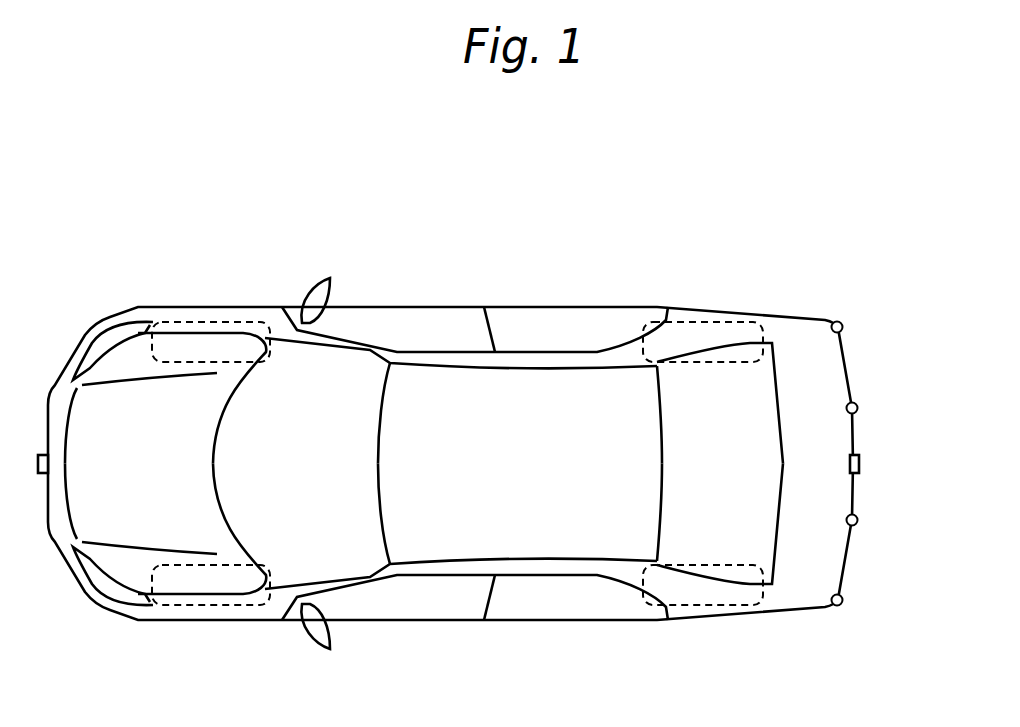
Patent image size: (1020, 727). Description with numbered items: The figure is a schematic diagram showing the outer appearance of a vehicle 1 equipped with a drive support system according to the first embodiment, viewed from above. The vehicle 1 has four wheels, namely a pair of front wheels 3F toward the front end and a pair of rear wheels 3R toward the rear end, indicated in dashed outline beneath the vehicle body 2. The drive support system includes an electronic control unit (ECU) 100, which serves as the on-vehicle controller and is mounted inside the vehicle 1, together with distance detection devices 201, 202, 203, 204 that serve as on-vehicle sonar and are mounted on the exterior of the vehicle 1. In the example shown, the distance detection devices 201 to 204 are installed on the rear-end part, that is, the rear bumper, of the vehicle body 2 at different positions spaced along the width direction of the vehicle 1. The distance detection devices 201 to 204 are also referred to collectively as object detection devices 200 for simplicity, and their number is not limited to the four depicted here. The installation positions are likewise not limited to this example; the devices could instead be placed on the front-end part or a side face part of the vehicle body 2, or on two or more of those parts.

The vehicle 1 is at (519, 420).
The electronic control unit (ECU) 100 is at (632, 237).
The vehicle body 2 is at (793, 315).
The front wheels 3F is at (213, 322).
The rear wheels 3R is at (708, 322).
The object detection devices 200 is at (917, 458).
The distance detection device 201 is at (843, 600).
The distance detection device 202 is at (857, 521).
The distance detection device 203 is at (857, 407).
The distance detection device 204 is at (842, 325).